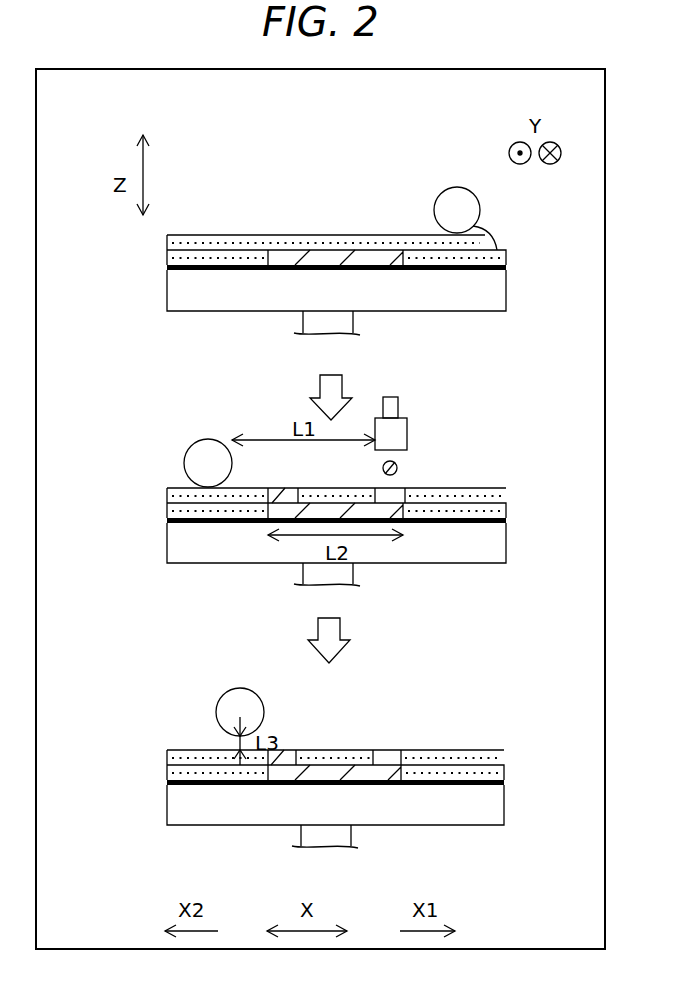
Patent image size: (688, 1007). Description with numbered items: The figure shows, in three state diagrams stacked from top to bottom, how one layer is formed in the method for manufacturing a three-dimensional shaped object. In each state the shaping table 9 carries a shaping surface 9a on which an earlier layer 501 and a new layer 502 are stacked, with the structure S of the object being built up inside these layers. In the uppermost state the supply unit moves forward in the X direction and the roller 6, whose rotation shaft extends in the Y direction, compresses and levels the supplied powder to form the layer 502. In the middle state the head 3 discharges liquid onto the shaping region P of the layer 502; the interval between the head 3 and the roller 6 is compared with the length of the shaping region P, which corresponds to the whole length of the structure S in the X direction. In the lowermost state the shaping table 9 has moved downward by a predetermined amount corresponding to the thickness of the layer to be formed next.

The shaping table 9 is at (200, 300).
The shaping surface 9a is at (167, 272).
The layer 501 is at (166, 257).
The layer 502 is at (167, 240).
The roller 6 is at (457, 187).
The head 3 is at (390, 397).
The structure S is at (268, 266).
The shaping region P is at (400, 487).